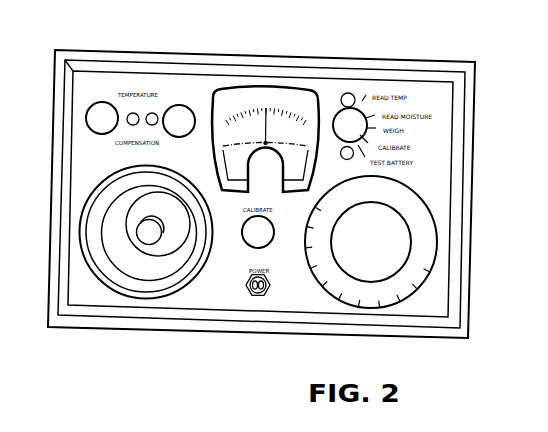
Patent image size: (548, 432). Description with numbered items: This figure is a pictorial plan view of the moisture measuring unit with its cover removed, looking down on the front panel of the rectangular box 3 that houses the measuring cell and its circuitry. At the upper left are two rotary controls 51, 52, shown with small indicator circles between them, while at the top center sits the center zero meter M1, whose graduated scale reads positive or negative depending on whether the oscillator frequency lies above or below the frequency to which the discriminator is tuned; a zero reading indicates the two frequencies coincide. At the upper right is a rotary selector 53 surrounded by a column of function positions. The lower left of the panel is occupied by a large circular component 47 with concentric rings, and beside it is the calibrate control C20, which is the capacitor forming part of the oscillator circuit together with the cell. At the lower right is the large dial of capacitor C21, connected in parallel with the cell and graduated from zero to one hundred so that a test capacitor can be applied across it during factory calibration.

The rectangular box 3 is at (322, 62).
The temperature compensation control knob 51 is at (93, 118).
The compensation control knob 52 is at (184, 113).
The center zero meter M1 is at (255, 90).
The function selector switch 53 is at (352, 118).
The sample weighing platform 47 is at (126, 293).
The capacitor C20 is at (257, 243).
The capacitor C21 is at (367, 265).